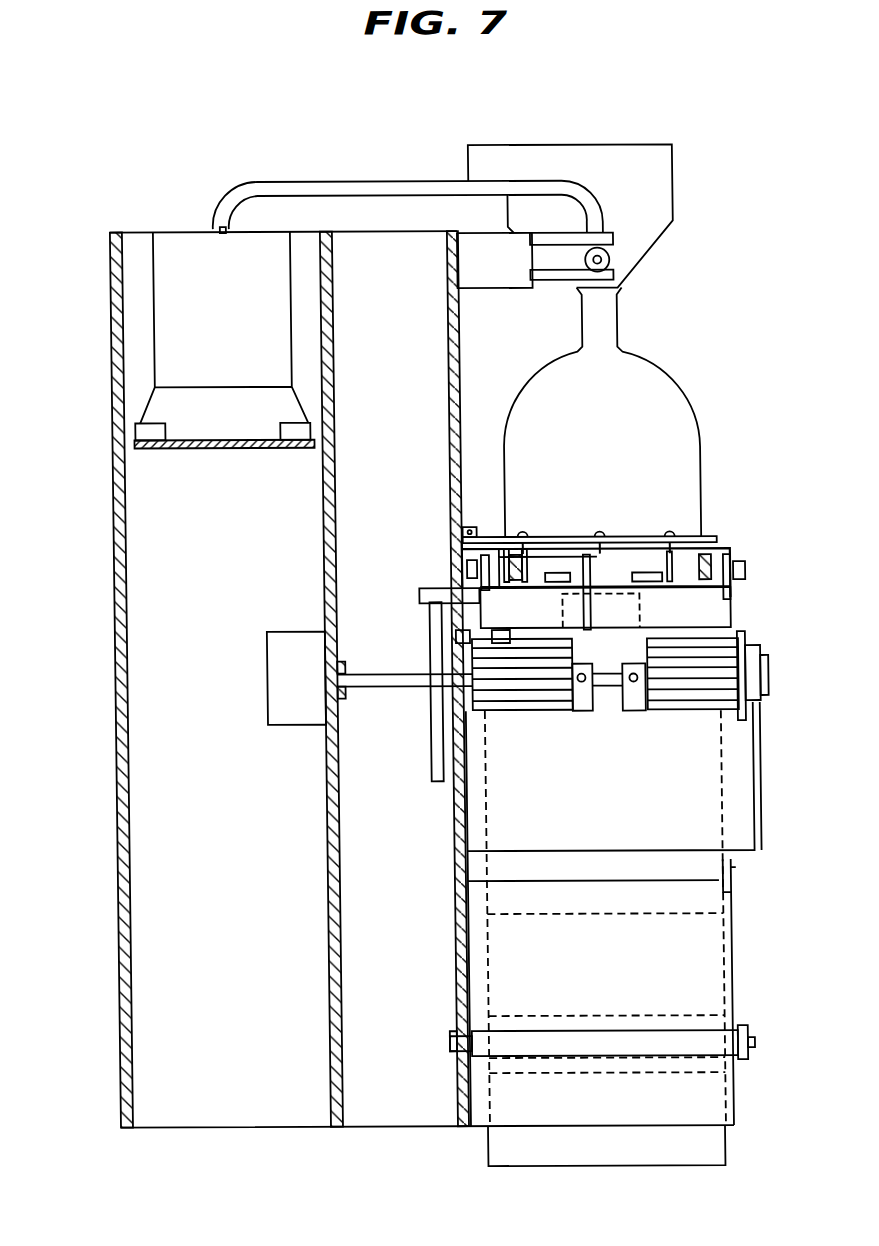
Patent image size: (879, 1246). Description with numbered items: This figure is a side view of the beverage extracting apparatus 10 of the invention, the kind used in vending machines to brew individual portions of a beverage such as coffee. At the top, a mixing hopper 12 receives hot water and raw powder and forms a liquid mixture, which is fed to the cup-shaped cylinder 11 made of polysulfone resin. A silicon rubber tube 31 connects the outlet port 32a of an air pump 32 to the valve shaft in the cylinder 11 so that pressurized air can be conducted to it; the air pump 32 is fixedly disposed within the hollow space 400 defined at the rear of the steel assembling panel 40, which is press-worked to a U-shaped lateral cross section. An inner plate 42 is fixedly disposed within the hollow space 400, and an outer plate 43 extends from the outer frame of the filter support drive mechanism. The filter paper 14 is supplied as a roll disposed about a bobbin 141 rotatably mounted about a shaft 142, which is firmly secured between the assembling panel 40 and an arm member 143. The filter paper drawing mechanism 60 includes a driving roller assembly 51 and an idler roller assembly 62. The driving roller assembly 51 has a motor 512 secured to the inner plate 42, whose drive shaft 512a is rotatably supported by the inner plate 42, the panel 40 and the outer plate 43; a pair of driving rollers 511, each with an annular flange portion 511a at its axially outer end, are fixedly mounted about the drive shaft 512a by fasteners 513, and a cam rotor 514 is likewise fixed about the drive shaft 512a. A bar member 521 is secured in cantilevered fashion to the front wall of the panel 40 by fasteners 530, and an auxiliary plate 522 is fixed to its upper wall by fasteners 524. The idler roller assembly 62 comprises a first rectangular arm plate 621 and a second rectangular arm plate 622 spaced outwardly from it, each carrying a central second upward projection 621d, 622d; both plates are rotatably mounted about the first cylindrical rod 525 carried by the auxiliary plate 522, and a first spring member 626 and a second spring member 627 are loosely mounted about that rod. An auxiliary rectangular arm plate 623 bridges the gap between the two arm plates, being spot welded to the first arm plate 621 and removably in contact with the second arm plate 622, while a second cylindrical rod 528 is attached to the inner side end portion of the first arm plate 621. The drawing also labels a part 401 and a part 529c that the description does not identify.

The beverage extracting apparatus 10 is at (611, 135).
The cup-shaped cylinder 11 is at (665, 386).
The mixing hopper 12 is at (665, 172).
The filter paper 14 is at (700, 856).
The tube 31 is at (381, 185).
The air pump 32 is at (150, 326).
The outlet port 32a is at (215, 228).
The assembling panel 40 is at (453, 343).
The inner plate 42 is at (318, 1022).
The outer plate 43 is at (752, 781).
The driving roller assembly 51 is at (738, 658).
The filter paper drawing mechanism 60 is at (738, 588).
The idler roller assembly 62 is at (737, 614).
The bobbin 141 is at (578, 1076).
The shaft 142 is at (645, 1046).
The arm member 143 is at (730, 1062).
The hollow space 400 is at (242, 886).
The bracket 401 is at (470, 560).
The driving rollers 511 is at (522, 713).
The annular flange portion 511a is at (467, 713).
The motor 512 is at (262, 712).
The drive shaft 512a is at (343, 690).
The fasteners 513 is at (573, 713).
The cam rotor 514 is at (430, 778).
The bar member 521 is at (700, 540).
The auxiliary plate 522 is at (720, 552).
The fasteners 524 is at (594, 535).
The first cylindrical rod 525 is at (622, 560).
The second cylindrical rod 528 is at (425, 592).
The bolt 529c is at (460, 632).
The fasteners 530 is at (461, 528).
The first rectangular arm plate 621 is at (488, 596).
The second upward projection 621d is at (545, 575).
The second rectangular arm plate 622 is at (730, 601).
The second upward projection 622d is at (680, 560).
The auxiliary rectangular arm plate 623 is at (605, 608).
The first spring member 626 is at (512, 535).
The second spring member 627 is at (730, 570).